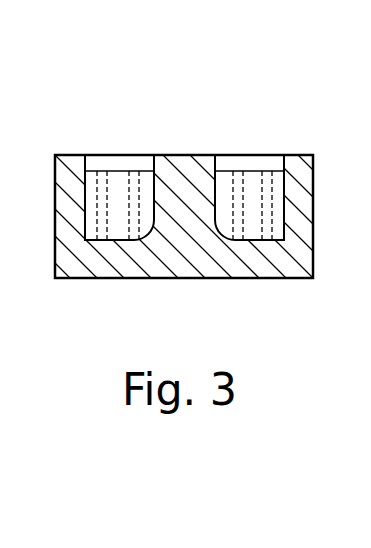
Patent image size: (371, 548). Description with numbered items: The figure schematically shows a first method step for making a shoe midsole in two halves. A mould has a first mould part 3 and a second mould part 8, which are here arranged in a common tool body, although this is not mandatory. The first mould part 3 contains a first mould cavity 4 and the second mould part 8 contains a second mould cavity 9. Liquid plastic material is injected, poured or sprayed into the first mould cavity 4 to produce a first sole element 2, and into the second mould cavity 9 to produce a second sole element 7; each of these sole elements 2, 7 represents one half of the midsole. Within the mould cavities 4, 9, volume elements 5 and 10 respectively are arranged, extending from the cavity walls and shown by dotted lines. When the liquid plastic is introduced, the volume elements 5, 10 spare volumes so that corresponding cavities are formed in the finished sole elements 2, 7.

The first sole element 2 is at (120, 182).
The first mould part 3 is at (75, 182).
The first mould cavity 4 is at (153, 183).
The volume elements 5 is at (103, 232).
The second sole element 7 is at (253, 182).
The second mould part 8 is at (297, 175).
The second mould cavity 9 is at (285, 184).
The volume elements 10 is at (237, 232).